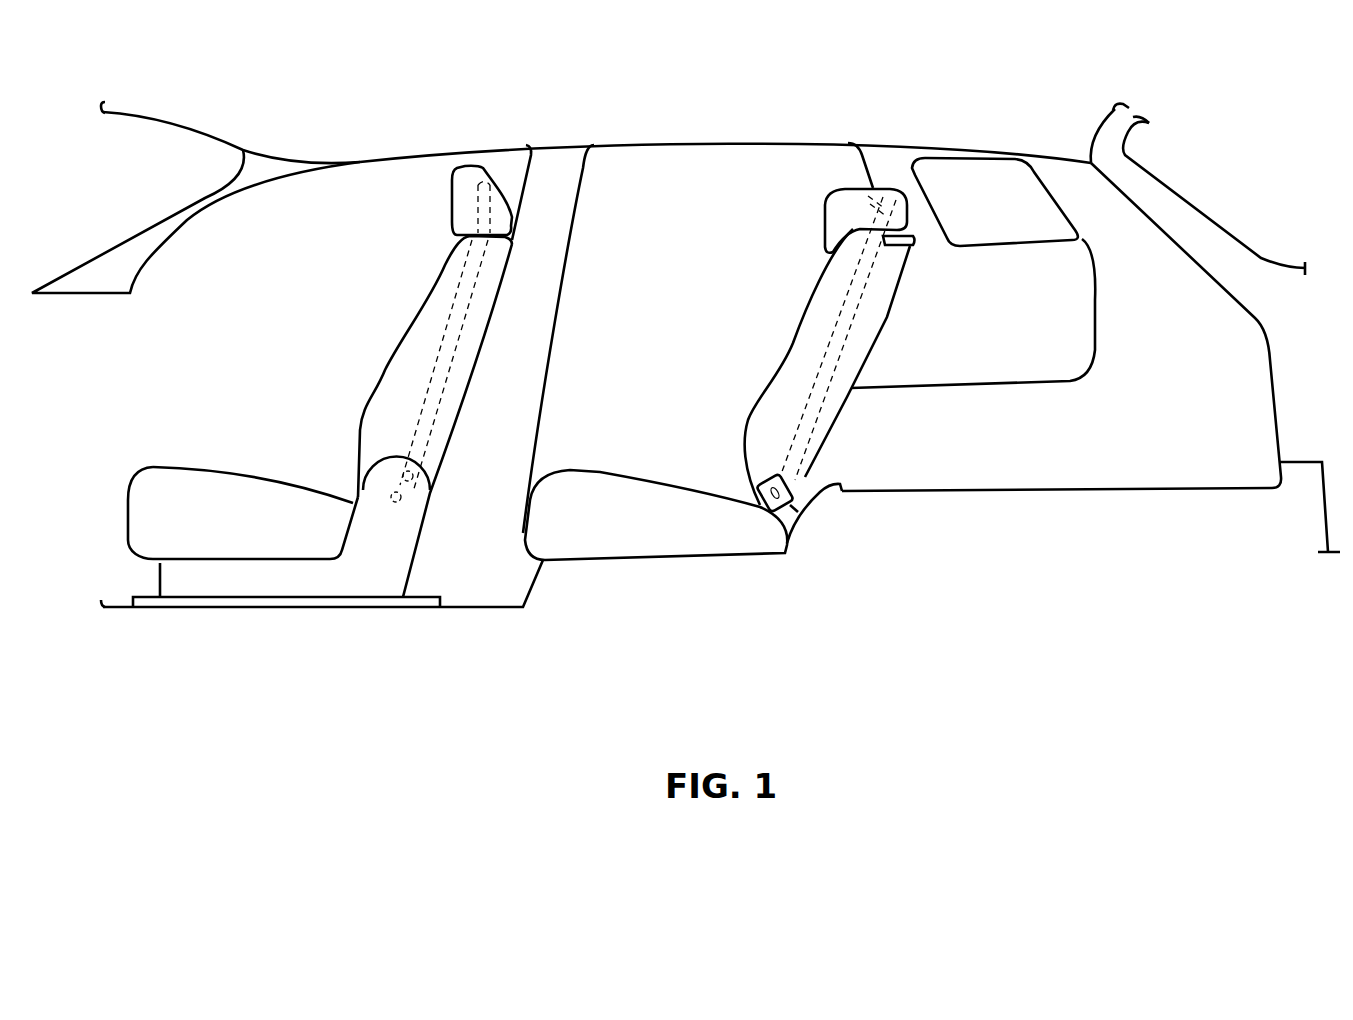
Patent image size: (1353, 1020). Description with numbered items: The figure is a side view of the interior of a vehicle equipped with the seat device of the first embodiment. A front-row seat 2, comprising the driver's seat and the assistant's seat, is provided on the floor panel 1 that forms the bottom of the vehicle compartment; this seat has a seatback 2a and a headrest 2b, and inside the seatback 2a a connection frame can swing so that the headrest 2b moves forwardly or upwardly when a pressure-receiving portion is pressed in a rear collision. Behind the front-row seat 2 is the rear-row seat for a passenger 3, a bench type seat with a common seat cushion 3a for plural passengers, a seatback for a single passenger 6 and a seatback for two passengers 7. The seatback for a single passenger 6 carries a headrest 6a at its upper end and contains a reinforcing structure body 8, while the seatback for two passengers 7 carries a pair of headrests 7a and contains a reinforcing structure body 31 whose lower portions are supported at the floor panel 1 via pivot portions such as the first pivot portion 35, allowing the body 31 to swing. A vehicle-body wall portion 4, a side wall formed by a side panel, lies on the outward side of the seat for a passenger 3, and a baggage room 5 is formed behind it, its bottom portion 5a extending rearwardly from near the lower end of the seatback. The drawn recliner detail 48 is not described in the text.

The floor panel 1 is at (467, 600).
The front-row seat 2 is at (321, 381).
The seatback 2a is at (360, 427).
The headrest 2b is at (450, 198).
The seat for a passenger 3 is at (765, 394).
The seat cushion 3a is at (657, 543).
The vehicle-body wall portion 4 is at (895, 157).
The baggage room 5 is at (1166, 412).
The bottom portion 5a is at (985, 485).
The seatback for a single passenger 6 is at (781, 367).
The seatback for two passengers 7 is at (760, 387).
The headrest 6a is at (795, 209).
The headrest 7a is at (827, 212).
The reinforcing structure body 8 is at (893, 338).
The reinforcing structure body 31 is at (867, 328).
The first pivot portion 35 is at (793, 503).
The recliner mechanism 48 is at (407, 477).